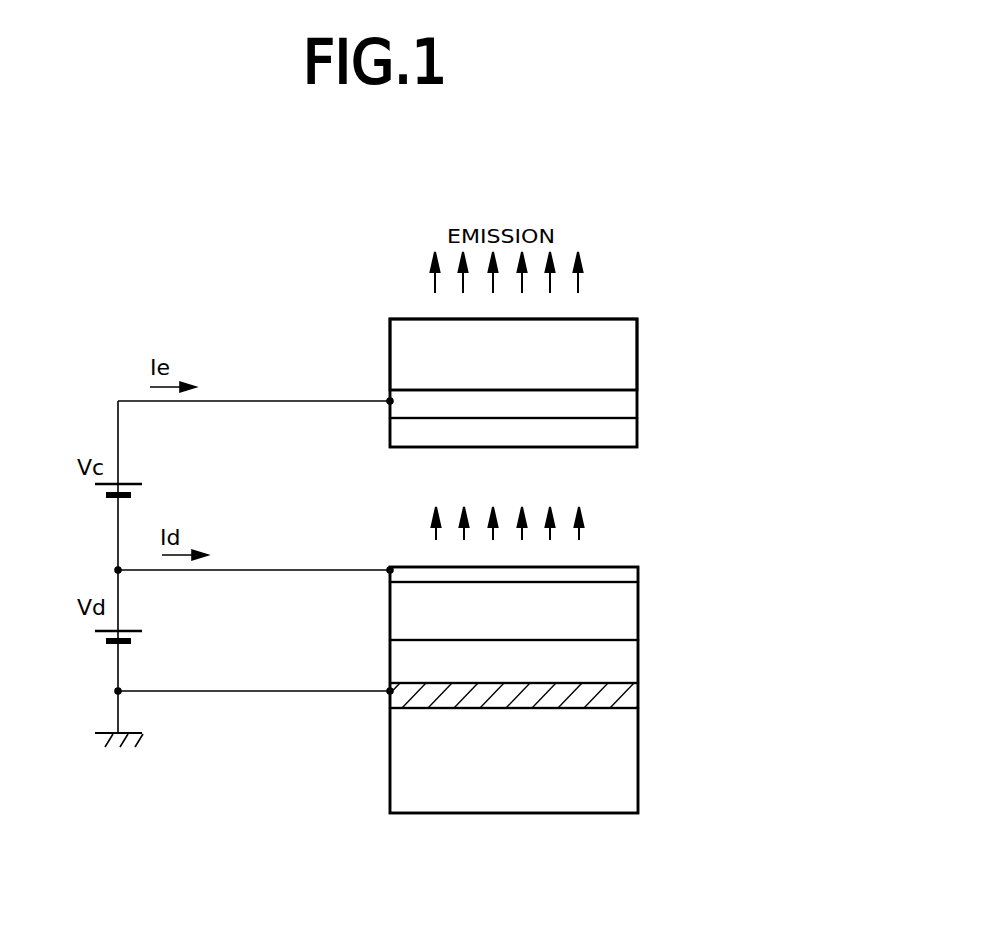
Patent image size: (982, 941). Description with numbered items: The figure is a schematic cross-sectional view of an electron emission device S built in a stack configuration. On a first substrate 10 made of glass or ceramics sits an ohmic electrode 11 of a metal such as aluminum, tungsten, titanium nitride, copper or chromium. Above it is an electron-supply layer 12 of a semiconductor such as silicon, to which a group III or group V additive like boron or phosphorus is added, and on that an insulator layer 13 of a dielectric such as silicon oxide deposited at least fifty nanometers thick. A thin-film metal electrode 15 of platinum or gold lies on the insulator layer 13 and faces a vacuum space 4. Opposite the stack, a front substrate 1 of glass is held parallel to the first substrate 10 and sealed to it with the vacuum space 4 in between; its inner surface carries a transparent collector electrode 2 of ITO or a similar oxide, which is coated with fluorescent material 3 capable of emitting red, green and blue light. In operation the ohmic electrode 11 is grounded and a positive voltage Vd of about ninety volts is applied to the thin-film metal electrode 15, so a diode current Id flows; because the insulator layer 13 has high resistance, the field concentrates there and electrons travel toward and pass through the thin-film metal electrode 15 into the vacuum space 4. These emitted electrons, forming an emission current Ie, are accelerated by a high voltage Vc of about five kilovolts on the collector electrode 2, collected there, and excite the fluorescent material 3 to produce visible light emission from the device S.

The front substrate 1 is at (630, 353).
The transparent collector electrode 2 is at (632, 407).
The fluorescent material 3 is at (632, 437).
The vacuum space 4 is at (522, 493).
The first substrate 10 is at (632, 778).
The ohmic electrode 11 is at (635, 695).
The electron-supply layer 12 is at (632, 662).
The insulator layer 13 is at (632, 618).
The thin-film metal electrode 15 is at (635, 573).
The electron emission device S is at (736, 512).